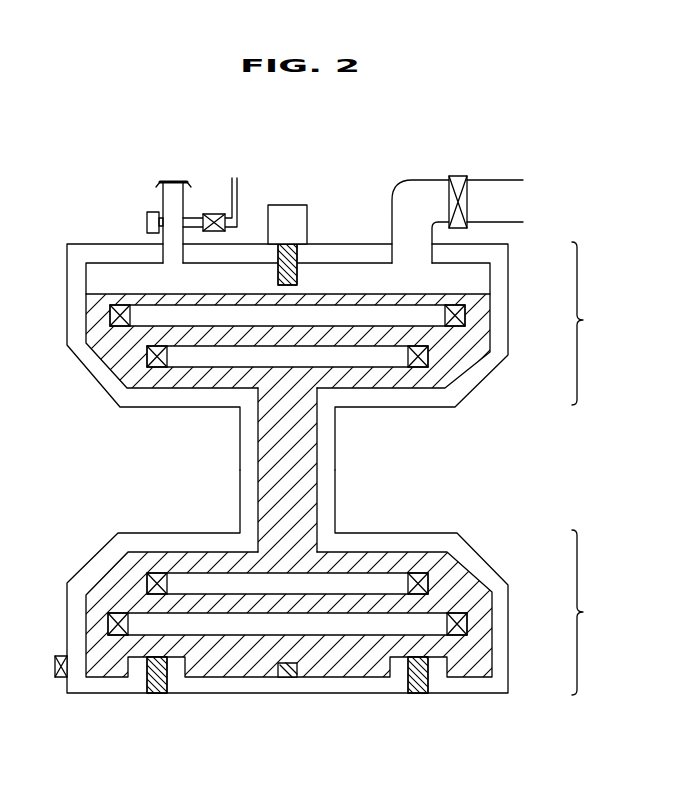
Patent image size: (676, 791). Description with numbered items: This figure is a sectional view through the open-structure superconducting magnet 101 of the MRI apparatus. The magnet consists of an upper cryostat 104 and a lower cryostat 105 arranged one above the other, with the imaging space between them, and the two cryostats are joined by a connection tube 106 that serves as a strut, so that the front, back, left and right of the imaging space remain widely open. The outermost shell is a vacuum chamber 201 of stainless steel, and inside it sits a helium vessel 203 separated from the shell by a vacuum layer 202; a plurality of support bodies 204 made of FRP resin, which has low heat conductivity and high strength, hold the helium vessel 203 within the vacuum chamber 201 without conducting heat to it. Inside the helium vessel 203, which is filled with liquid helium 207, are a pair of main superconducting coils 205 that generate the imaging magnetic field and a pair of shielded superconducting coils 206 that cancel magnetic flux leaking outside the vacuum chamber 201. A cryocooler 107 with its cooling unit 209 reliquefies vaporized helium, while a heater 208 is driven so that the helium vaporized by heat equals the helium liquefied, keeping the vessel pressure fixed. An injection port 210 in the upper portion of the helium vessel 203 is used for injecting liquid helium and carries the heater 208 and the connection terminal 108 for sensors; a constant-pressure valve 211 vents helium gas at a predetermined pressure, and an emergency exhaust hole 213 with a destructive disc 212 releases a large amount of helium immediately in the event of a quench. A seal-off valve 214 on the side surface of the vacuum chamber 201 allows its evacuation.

The superconducting magnet 101 is at (482, 90).
The upper cryostat 104 is at (356, 323).
The lower cryostat 105 is at (355, 612).
The connection tube 106 is at (240, 470).
The cryocooler 107 is at (285, 210).
The connection terminal 108 is at (147, 223).
The vacuum chamber 201 is at (423, 532).
The vacuum layer 202 is at (450, 540).
The helium vessel 203 is at (482, 573).
The support body 204 is at (152, 693).
The main superconducting coil 205 is at (380, 370).
The shielded superconducting coil 206 is at (440, 328).
The liquid helium 207 is at (460, 294).
The heater 208 is at (285, 678).
The cooling unit 209 is at (298, 273).
The injection port 210 is at (167, 178).
The constant-pressure valve 211 is at (210, 213).
The destructive disc 212 is at (457, 176).
The emergency exhaust hole 213 is at (410, 193).
The seal-off valve 214 is at (56, 678).